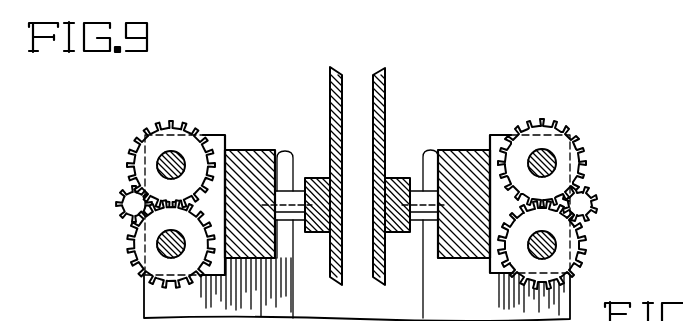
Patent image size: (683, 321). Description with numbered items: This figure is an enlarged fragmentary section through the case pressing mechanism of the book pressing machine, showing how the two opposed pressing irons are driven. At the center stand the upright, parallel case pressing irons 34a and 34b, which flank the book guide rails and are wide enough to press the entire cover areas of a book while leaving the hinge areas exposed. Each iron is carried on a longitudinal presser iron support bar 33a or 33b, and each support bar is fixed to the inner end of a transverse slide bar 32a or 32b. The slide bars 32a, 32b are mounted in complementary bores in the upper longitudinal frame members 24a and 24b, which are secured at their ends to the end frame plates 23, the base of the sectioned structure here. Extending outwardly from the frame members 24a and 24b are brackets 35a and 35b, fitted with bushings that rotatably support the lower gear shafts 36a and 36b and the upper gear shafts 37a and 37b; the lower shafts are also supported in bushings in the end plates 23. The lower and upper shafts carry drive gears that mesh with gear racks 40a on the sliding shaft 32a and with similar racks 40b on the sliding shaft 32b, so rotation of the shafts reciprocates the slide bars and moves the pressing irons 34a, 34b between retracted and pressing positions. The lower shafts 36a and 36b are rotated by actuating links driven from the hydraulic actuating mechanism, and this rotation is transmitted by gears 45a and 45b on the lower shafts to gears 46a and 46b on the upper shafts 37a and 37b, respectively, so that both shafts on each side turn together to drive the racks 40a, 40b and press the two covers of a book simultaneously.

The end frame plate 23 is at (435, 301).
The upper longitudinal frame member 24a is at (243, 150).
The upper longitudinal frame member 24b is at (463, 143).
The slide bar 32a is at (283, 190).
The slide bar 32b is at (418, 189).
The presser iron support bar 33a is at (322, 178).
The presser iron support bar 33b is at (393, 178).
The case pressing iron 34a is at (337, 50).
The case pressing iron 34b is at (383, 67).
The bracket 35a is at (218, 134).
The bracket 35b is at (498, 134).
The lower gear shaft 36a is at (158, 243).
The lower gear shaft 36b is at (557, 245).
The upper gear shaft 37a is at (158, 163).
The upper gear shaft 37b is at (556, 162).
The gear rack 40a is at (118, 203).
The gear rack 40b is at (594, 205).
The gear 45a is at (130, 262).
The gear 45b is at (578, 262).
The gear 46a is at (163, 128).
The gear 46b is at (560, 126).